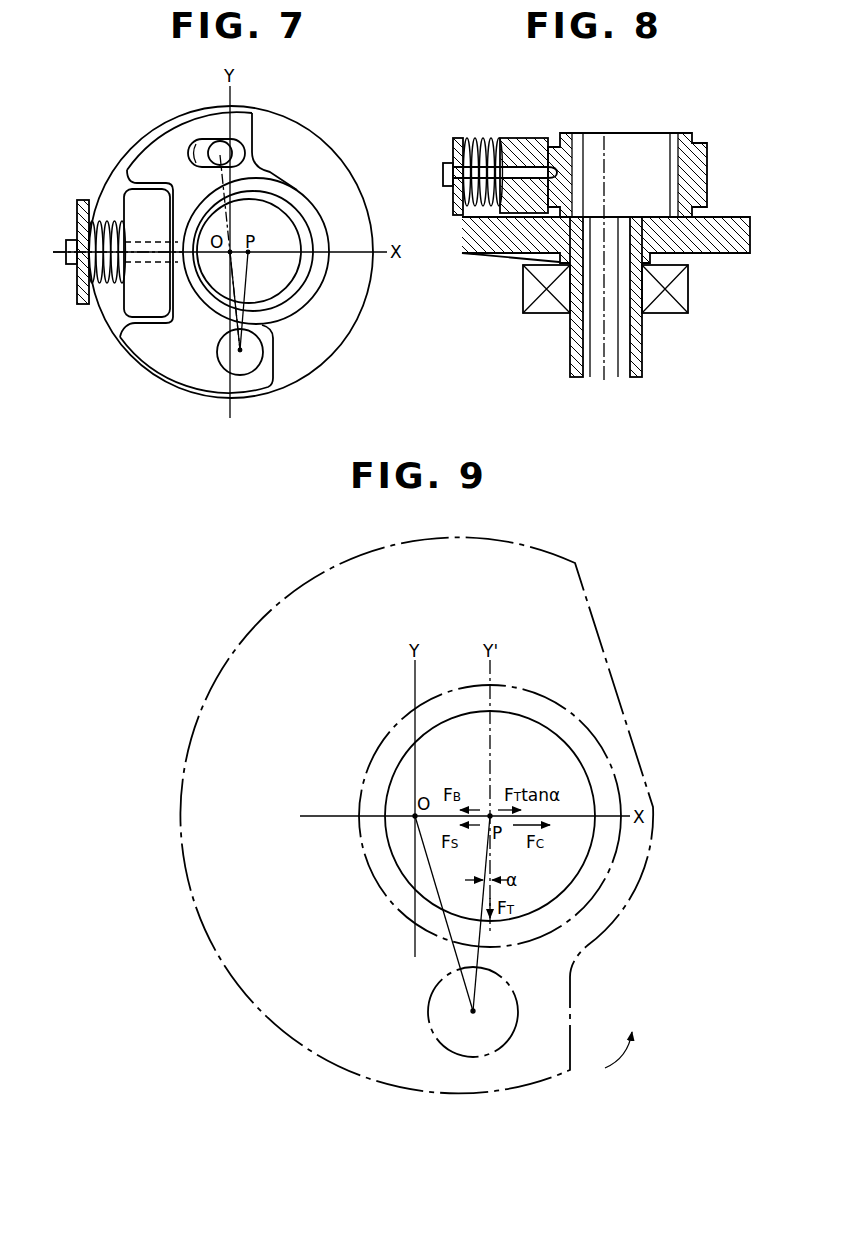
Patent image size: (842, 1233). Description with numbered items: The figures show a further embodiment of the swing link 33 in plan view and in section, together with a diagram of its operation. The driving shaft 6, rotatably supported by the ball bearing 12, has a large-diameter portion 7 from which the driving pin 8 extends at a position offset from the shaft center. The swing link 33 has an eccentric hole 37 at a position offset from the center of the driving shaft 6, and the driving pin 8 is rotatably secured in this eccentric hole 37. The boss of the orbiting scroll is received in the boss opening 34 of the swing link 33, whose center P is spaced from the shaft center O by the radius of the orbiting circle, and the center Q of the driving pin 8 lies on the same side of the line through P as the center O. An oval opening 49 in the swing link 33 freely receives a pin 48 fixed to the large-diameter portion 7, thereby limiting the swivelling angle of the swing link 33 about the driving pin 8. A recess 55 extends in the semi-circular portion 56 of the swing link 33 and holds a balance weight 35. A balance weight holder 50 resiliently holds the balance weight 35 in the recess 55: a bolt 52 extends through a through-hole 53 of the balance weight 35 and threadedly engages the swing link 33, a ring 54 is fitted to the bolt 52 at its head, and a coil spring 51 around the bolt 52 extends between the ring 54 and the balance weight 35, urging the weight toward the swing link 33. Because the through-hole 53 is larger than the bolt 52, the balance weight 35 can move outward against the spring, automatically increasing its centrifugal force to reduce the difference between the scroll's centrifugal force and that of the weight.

In FIG. 8, the driving shaft 6 is at (640, 337).
In FIG. 7, the large-diameter portion 7 is at (357, 297).
In FIG. 8, the large-diameter portion 7 is at (720, 252).
In FIG. 7, the driving pin 8 is at (256, 357).
In FIG. 9, the driving pin 8 is at (511, 1018).
In FIG. 8, the ball bearing 12 is at (684, 294).
In FIG. 7, the swing link 33 is at (308, 214).
In FIG. 8, the swing link 33 is at (700, 178).
In FIG. 9, the swing link 33 is at (572, 605).
In FIG. 7, the boss opening 34 is at (283, 212).
In FIG. 9, the boss opening 34 is at (569, 749).
In FIG. 7, the balance weight 35 is at (148, 302).
In FIG. 8, the balance weight 35 is at (523, 145).
In FIG. 7, the eccentric hole 37 is at (221, 358).
In FIG. 8, the eccentric hole 37 is at (677, 148).
In FIG. 9, the eccentric hole 37 is at (445, 1044).
In FIG. 7, the pin 48 is at (222, 153).
In FIG. 7, the oval opening 49 is at (196, 150).
In FIG. 7, the balance weight holder 50 is at (107, 280).
In FIG. 8, the balance weight holder 50 is at (503, 179).
In FIG. 7, the coil spring 51 is at (110, 287).
In FIG. 8, the coil spring 51 is at (482, 140).
In FIG. 7, the bolt 52 is at (68, 256).
In FIG. 8, the bolt 52 is at (447, 167).
In FIG. 8, the through-hole 53 is at (530, 170).
In FIG. 7, the ring 54 is at (82, 305).
In FIG. 8, the ring 54 is at (460, 217).
In FIG. 7, the recess 55 is at (124, 182).
In FIG. 7, the semi-circular portion 56 is at (150, 145).